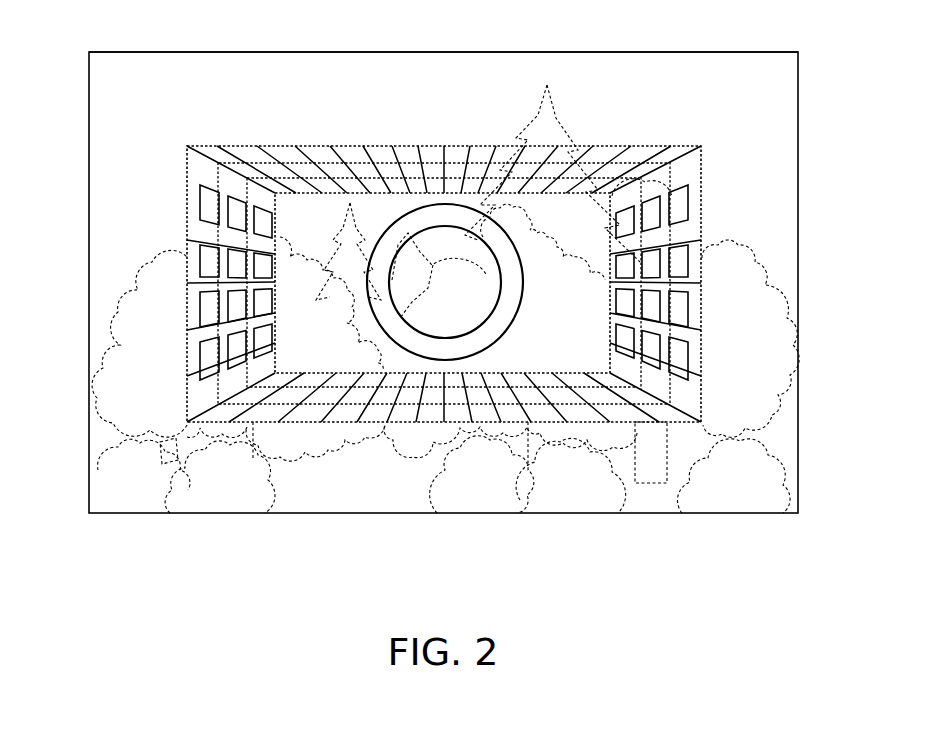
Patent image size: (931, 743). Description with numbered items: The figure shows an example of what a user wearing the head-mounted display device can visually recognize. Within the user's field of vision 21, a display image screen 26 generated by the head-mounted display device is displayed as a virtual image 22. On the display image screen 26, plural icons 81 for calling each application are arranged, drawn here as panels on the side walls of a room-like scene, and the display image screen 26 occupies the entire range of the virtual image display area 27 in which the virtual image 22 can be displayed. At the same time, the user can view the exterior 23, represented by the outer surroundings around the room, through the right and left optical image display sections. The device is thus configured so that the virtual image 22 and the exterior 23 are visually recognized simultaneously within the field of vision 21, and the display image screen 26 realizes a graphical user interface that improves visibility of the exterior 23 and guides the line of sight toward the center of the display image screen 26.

The field of vision 21 is at (696, 52).
The virtual image 22 is at (444, 140).
The exterior 23 is at (756, 66).
The display image screen 26 is at (656, 146).
The virtual image display area 27 is at (703, 167).
The icons 81 is at (207, 318).